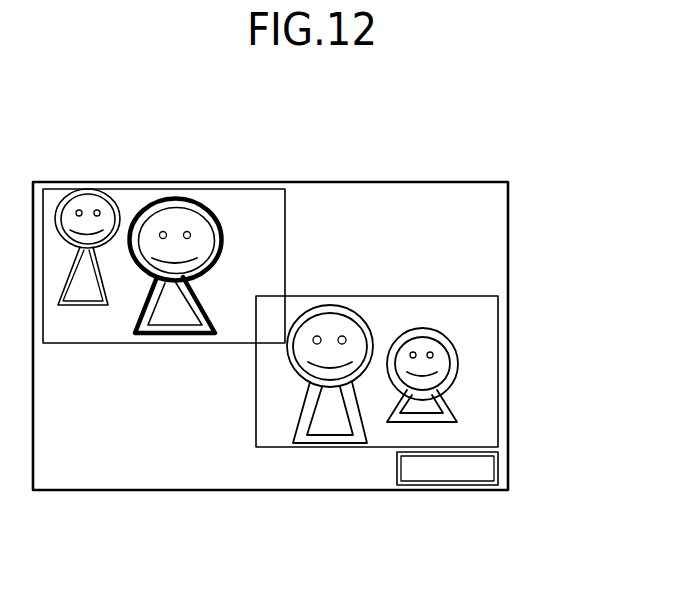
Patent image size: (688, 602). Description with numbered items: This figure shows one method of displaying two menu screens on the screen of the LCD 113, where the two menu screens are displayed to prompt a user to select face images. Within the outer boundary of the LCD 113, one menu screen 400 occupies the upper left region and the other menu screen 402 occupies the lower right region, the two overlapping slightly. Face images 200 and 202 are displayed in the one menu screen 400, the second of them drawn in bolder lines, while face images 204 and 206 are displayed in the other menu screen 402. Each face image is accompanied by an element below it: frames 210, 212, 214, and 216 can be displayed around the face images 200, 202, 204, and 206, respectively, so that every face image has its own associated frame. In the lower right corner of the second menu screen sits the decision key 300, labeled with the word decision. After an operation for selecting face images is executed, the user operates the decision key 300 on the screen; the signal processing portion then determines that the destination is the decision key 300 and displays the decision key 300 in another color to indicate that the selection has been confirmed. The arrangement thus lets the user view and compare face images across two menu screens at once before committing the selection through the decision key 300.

The LCD 113 is at (398, 182).
The face image 200 is at (85, 202).
The face image 202 is at (172, 220).
The face image 204 is at (333, 327).
The face image 206 is at (425, 342).
The frame 210 is at (85, 305).
The frame 212 is at (173, 335).
The frame 214 is at (330, 445).
The frame 216 is at (449, 406).
The decision key 300 is at (447, 487).
The menu screen 400 is at (249, 200).
The menu screen 402 is at (482, 333).